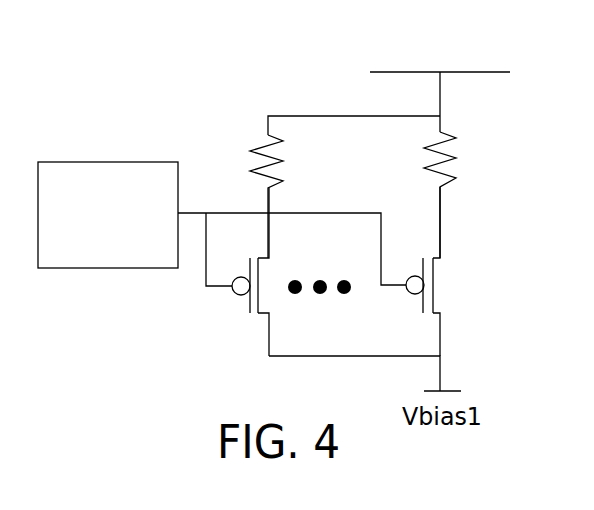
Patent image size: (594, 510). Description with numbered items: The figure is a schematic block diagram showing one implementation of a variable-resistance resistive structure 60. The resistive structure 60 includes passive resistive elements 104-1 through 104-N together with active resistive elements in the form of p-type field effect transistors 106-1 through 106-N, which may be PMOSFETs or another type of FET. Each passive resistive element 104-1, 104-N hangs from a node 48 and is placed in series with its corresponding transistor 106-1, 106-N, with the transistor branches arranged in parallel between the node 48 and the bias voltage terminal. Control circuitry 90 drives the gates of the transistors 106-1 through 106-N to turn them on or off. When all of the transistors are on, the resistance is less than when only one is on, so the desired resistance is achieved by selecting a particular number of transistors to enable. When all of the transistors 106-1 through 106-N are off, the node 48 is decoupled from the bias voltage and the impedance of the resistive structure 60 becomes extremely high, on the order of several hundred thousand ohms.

The node 48 is at (389, 87).
The control circuitry 90 is at (156, 254).
The passive resistive element 104-N is at (284, 152).
The passive resistive element 104-1 is at (458, 150).
The p-type field effect transistor 106-N is at (250, 303).
The p-type field effect transistor 106-1 is at (423, 303).
The resistive structure 60 is at (145, 378).